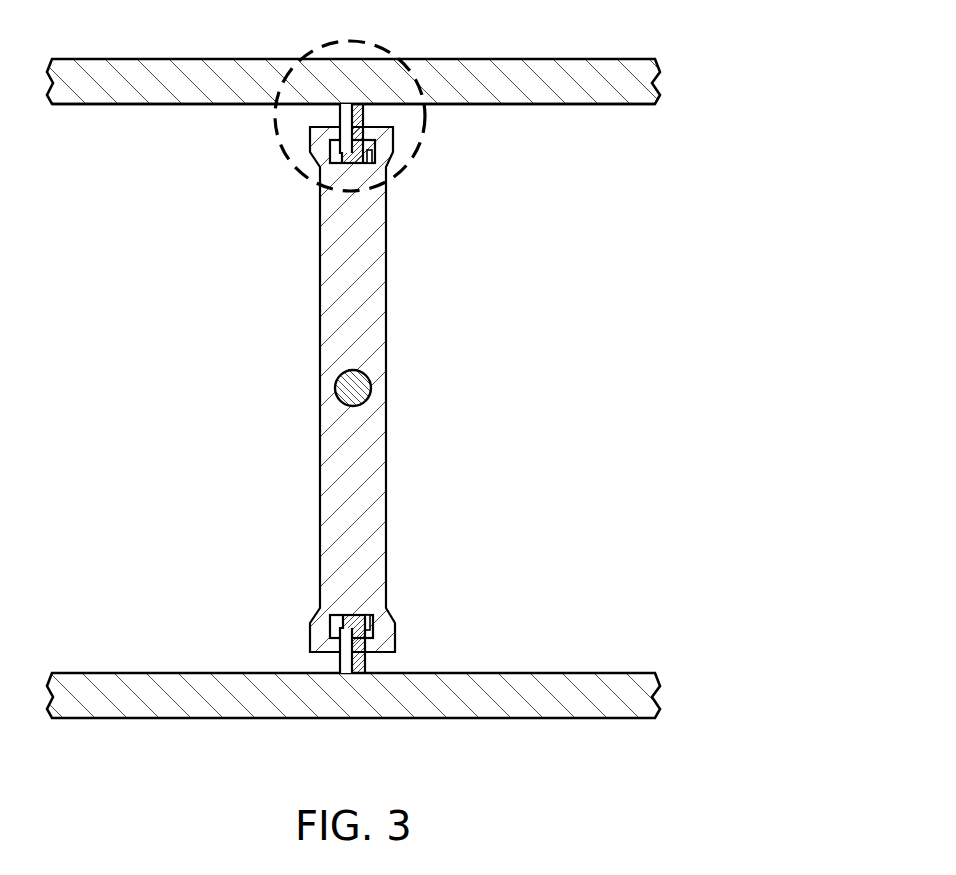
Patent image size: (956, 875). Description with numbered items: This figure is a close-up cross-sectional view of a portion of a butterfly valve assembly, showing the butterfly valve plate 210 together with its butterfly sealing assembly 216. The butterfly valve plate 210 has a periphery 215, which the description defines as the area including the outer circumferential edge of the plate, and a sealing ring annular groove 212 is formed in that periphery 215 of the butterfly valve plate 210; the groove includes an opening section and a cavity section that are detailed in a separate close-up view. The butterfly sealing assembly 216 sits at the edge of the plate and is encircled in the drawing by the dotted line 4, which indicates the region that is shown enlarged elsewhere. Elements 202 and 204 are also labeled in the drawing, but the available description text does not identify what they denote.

The first panel 202 is at (554, 68).
The panel inner surface 204 is at (596, 104).
The strut 210 is at (376, 256).
The end fitting pocket 212 is at (330, 627).
The fastener 215 is at (385, 657).
The fastener head 216 is at (299, 139).
The detail region of FIG. 4 is at (425, 138).